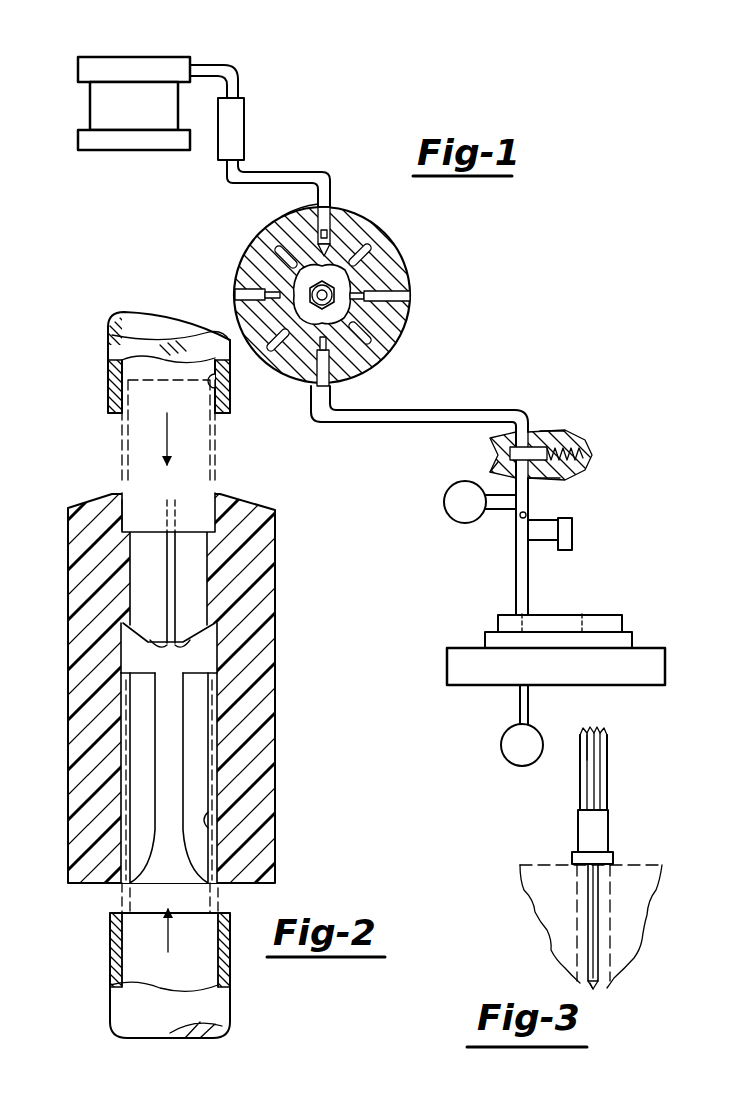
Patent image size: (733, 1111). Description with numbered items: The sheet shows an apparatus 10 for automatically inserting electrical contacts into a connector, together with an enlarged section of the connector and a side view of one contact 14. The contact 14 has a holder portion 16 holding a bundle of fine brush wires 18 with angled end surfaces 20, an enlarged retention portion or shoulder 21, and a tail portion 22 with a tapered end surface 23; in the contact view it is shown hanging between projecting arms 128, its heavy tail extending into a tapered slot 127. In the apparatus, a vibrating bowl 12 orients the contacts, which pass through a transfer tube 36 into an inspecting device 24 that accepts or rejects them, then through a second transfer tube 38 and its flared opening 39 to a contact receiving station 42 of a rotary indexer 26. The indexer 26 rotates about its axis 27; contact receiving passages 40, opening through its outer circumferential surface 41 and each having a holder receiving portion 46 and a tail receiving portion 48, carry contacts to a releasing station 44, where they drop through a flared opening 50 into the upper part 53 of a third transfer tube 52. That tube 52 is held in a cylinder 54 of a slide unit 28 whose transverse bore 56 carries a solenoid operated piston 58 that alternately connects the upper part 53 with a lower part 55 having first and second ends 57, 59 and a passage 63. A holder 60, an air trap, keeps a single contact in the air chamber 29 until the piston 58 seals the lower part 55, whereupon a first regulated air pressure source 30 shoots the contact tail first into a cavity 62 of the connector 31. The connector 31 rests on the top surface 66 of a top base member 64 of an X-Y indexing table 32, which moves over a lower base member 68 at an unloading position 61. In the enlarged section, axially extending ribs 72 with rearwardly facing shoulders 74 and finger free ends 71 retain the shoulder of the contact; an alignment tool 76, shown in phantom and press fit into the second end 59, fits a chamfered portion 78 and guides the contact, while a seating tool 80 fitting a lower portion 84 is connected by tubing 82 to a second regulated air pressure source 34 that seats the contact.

In FIG. 1, the apparatus for automatically inserting electrical contacts 10 is at (410, 99).
In FIG. 2, the apparatus for automatically inserting electrical contacts 10 is at (170, 622).
In FIG. 1, the vibrating bowl 12 is at (193, 55).
In FIG. 3, the electrical contact 14 is at (620, 806).
In FIG. 3, the holder portion 16 is at (578, 826).
In FIG. 3, the brush wires 18 is at (612, 762).
In FIG. 3, the angled end surfaces 20 is at (601, 736).
In FIG. 3, the retention portion or shoulder 21 is at (614, 858).
In FIG. 3, the tail portion 22 is at (586, 923).
In FIG. 3, the tapered end surface 23 is at (590, 987).
In FIG. 1, the inspecting device 24 is at (246, 130).
In FIG. 1, the rotary indexer 26 is at (410, 287).
In FIG. 1, the axis 27 is at (312, 289).
In FIG. 1, the slide unit 28 is at (579, 425).
In FIG. 1, the air chamber 29 is at (532, 500).
In FIG. 1, the first regulated air pressure source 30 is at (452, 515).
In FIG. 1, the connector 31 is at (632, 612).
In FIG. 2, the connector 31 is at (266, 495).
In FIG. 1, the X-Y indexing table 32 is at (658, 637).
In FIG. 1, the second regulated air pressure source 34 is at (508, 755).
In FIG. 1, the transfer tube 36 is at (238, 70).
In FIG. 1, the second transfer tube 38 is at (310, 181).
In FIG. 1, the flared opening 39 is at (318, 194).
In FIG. 1, the contact receiving passages 40 is at (333, 228).
In FIG. 1, the outer circumferential surface 41 is at (282, 210).
In FIG. 1, the contact receiving station 42 is at (331, 197).
In FIG. 1, the releasing station 44 is at (331, 383).
In FIG. 1, the holder receiving portion 46 is at (372, 296).
In FIG. 1, the tail receiving portion 48 is at (411, 297).
In FIG. 1, the flared opening 50 is at (312, 406).
In FIG. 1, the third transfer tube 52 is at (429, 407).
In FIG. 1, the upper part 53 is at (463, 411).
In FIG. 1, the cylinder 54 is at (553, 432).
In FIG. 1, the lower part 55 is at (532, 498).
In FIG. 2, the lower part 55 is at (108, 382).
In FIG. 1, the bore 56 is at (525, 431).
In FIG. 1, the first end 57 is at (497, 466).
In FIG. 1, the solenoid operated piston 58 is at (548, 482).
In FIG. 1, the second end 59 is at (502, 618).
In FIG. 2, the second end 59 is at (108, 411).
In FIG. 1, the holder 60 is at (574, 546).
In FIG. 1, the unloading position 61 is at (523, 627).
In FIG. 1, the cavity 62 is at (583, 627).
In FIG. 2, the cavity 62 is at (216, 648).
In FIG. 1, the passage 63 is at (516, 586).
In FIG. 2, the passage 63 is at (220, 398).
In FIG. 1, the top base member 64 is at (636, 630).
In FIG. 1, the top surface 66 is at (490, 636).
In FIG. 1, the lower base member 68 is at (447, 676).
In FIG. 2, the forward free ends 71 is at (170, 656).
In FIG. 2, the axially extending ribs 72 is at (160, 776).
In FIG. 2, the rearwardly facing shoulder 74 is at (131, 674).
In FIG. 2, the alignment tool 76 is at (122, 451).
In FIG. 2, the chamfered portion 78 is at (124, 510).
In FIG. 2, the seating tool 80 is at (172, 601).
In FIG. 1, the tubing 82 is at (520, 707).
In FIG. 2, the tubing 82 is at (232, 1018).
In FIG. 2, the lower portion 84 is at (216, 823).
In FIG. 3, the tapered slot 127 is at (612, 963).
In FIG. 3, the projecting arms 128 is at (540, 866).